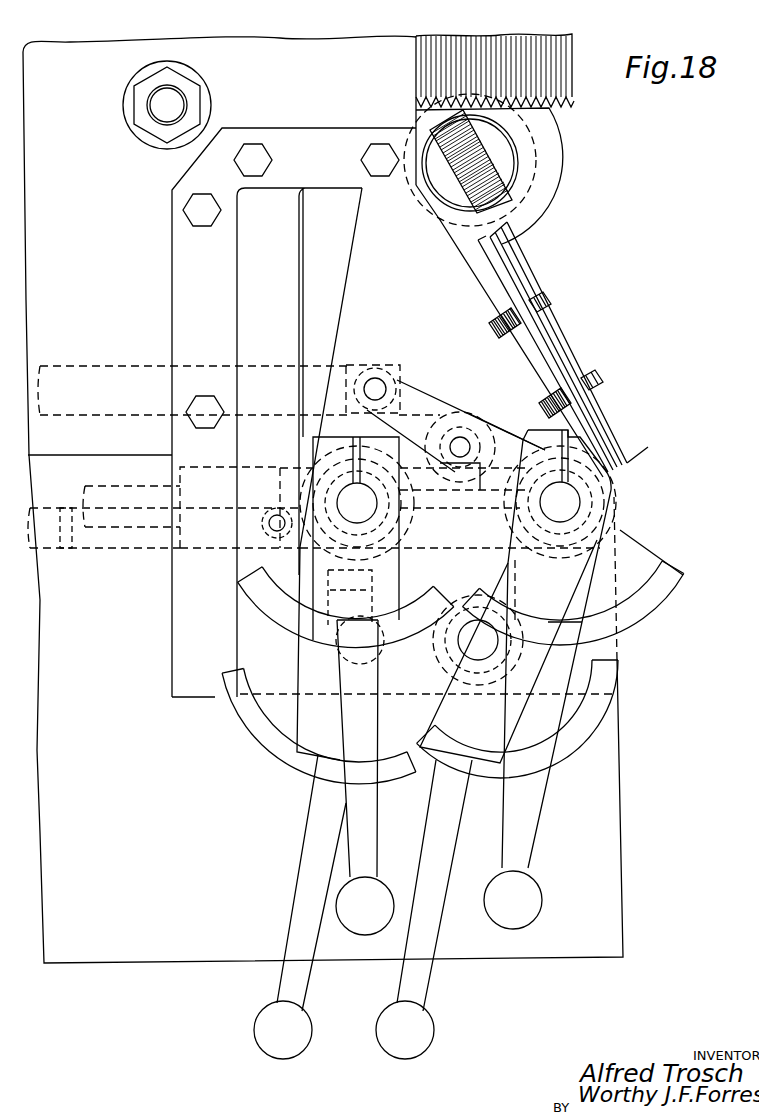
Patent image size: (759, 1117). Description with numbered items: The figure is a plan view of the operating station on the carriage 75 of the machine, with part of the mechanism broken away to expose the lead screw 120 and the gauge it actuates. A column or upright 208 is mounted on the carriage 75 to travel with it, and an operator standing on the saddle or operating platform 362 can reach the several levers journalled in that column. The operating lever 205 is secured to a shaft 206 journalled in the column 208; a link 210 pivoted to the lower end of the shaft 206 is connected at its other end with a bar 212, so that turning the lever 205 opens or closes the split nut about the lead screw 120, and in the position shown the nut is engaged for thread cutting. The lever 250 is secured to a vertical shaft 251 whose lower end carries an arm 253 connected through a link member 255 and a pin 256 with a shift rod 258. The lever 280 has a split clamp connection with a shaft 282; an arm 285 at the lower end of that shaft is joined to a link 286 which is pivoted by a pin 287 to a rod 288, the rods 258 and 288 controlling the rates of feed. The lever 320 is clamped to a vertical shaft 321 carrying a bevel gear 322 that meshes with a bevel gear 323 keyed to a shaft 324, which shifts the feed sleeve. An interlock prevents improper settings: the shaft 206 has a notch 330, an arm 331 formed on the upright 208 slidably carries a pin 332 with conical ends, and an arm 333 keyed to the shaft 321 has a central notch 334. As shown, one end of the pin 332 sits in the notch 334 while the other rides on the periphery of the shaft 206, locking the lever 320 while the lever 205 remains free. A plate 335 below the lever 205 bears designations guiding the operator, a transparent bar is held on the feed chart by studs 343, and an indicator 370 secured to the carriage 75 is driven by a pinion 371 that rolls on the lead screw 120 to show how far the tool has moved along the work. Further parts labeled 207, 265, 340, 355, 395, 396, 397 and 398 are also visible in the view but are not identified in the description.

The carriage 75 is at (269, 366).
The lead screw 120 is at (572, 56).
The operating lever 205 is at (535, 845).
The shaft 206 is at (573, 494).
The key 207 is at (554, 456).
The column 208 is at (640, 655).
The link 210 is at (410, 376).
The bar 212 is at (129, 366).
The lever 250 is at (443, 867).
The vertical shaft 251 is at (480, 660).
The arm 253 is at (548, 591).
The link member 255 is at (427, 621).
The pin 256 is at (405, 479).
The rod 258 is at (70, 510).
The dial inner edge 265 is at (339, 593).
The lever 280 is at (298, 995).
The shaft 282 is at (290, 662).
The arm 285 is at (227, 324).
The link 286 is at (292, 508).
The pin 287 is at (240, 553).
The rod 288 is at (47, 508).
The lever 320 is at (370, 846).
The vertical shaft 321 is at (362, 480).
The bevel gear 322 is at (383, 462).
The bevel gear 323 is at (318, 468).
The shaft 324 is at (124, 487).
The notch 330 is at (578, 500).
The arm 331 is at (512, 465).
The pin 332 is at (486, 446).
The arm 333 is at (430, 447).
The notch 334 is at (452, 481).
The plate 335 is at (560, 502).
The rod 340 is at (545, 340).
The studs 343 is at (498, 330).
The rod end 355 is at (640, 451).
The operating platform 362 is at (323, 499).
The indicator 370 is at (463, 188).
The pinion 371 is at (545, 150).
The dial 395 is at (665, 580).
The dial 396 is at (576, 668).
The dial 397 is at (258, 668).
The shaft 398 is at (240, 557).